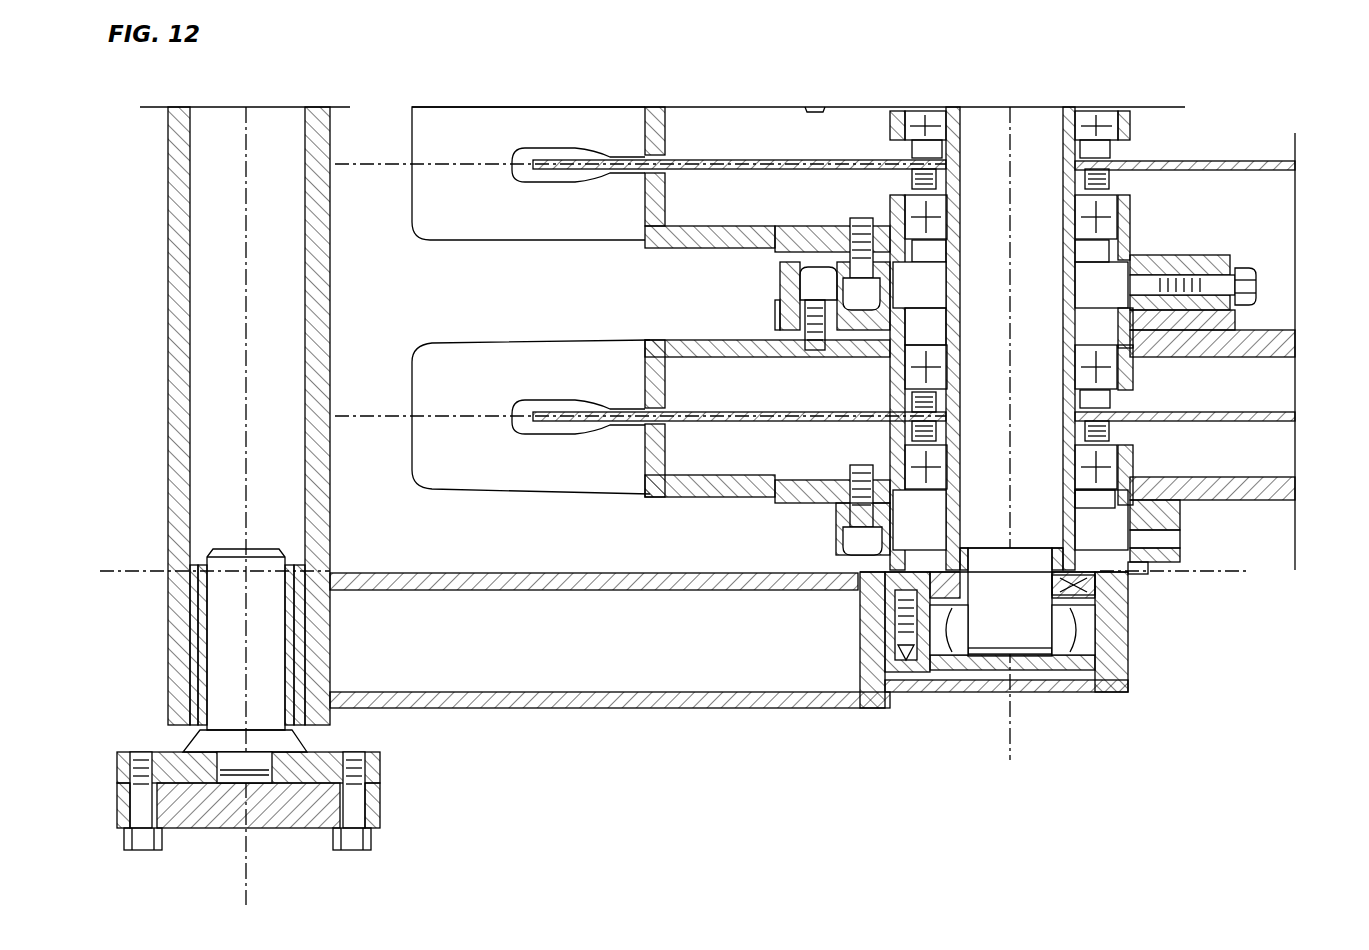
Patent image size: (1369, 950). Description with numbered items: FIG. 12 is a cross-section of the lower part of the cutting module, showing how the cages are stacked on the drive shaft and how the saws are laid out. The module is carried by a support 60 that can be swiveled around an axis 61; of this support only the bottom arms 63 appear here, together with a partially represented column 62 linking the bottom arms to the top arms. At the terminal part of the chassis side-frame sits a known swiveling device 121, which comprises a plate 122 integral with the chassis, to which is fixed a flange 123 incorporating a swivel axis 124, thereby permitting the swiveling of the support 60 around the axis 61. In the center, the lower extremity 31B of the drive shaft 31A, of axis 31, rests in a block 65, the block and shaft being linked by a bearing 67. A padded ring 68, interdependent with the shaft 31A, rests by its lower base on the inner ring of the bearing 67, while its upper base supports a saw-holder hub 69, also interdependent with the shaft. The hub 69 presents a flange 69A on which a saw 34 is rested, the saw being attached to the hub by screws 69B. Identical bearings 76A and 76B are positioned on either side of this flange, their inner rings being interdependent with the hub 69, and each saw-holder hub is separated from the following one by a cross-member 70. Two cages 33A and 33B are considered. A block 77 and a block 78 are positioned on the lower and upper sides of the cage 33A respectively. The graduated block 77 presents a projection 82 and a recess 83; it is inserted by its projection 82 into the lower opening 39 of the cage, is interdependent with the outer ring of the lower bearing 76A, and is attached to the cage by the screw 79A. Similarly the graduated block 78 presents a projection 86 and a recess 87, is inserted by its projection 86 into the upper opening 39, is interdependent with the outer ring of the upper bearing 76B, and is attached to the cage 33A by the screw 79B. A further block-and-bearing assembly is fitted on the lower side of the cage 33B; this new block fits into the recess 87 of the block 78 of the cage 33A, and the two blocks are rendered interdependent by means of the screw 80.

The support 60 is at (160, 278).
The axis 61 is at (246, 168).
The column 62 is at (176, 372).
The swivel axis 124 is at (222, 645).
The flange 123 is at (188, 772).
The plate 122 is at (272, 808).
The swiveling device 121 is at (219, 843).
The cage 33A is at (494, 482).
The cage 33B is at (494, 223).
The block 78 is at (786, 318).
The screw 79A is at (857, 540).
The screw 79B is at (820, 268).
The block 77 is at (868, 280).
The axis 31 is at (1016, 128).
The drive shaft 31A is at (1069, 132).
The lower extremity of the drive shaft 31B is at (1031, 632).
The cross-member 70 is at (1094, 262).
The saw 34 is at (1216, 162).
The screw 80 is at (1222, 288).
The recess 87 is at (1187, 310).
The projection 86 is at (1136, 372).
The lower bearing 76A is at (1112, 487).
The upper bearing 76B is at (1112, 398).
The saw-holder hub 69 is at (1115, 426).
The flange 69A is at (908, 430).
The screws 69B is at (908, 402).
The projection 82 is at (1136, 462).
The bottom arms 63 is at (537, 704).
The opening 39 is at (900, 640).
The block 65 is at (908, 706).
The bearing 67 is at (1072, 642).
The padded ring 68 is at (1084, 566).
The recess 83 is at (1148, 560).